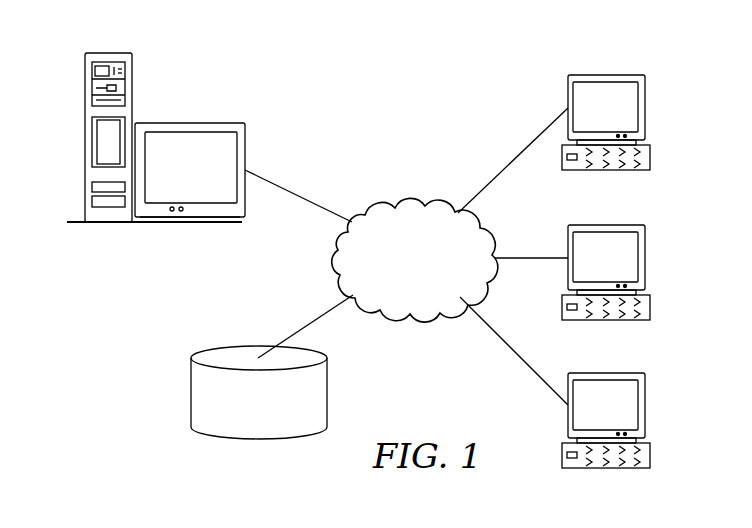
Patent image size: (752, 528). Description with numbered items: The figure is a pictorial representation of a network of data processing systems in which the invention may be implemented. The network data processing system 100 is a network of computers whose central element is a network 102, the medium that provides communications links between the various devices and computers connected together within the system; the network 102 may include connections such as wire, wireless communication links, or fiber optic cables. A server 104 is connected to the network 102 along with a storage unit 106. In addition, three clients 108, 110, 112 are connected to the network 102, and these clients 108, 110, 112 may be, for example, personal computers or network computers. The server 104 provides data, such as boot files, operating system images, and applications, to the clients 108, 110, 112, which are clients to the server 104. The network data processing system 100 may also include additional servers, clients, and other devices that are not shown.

The network data processing system 100 is at (468, 88).
The network 102 is at (383, 208).
The server 104 is at (85, 140).
The storage unit 106 is at (240, 438).
The client 108 is at (645, 108).
The client 110 is at (645, 258).
The client 112 is at (645, 405).